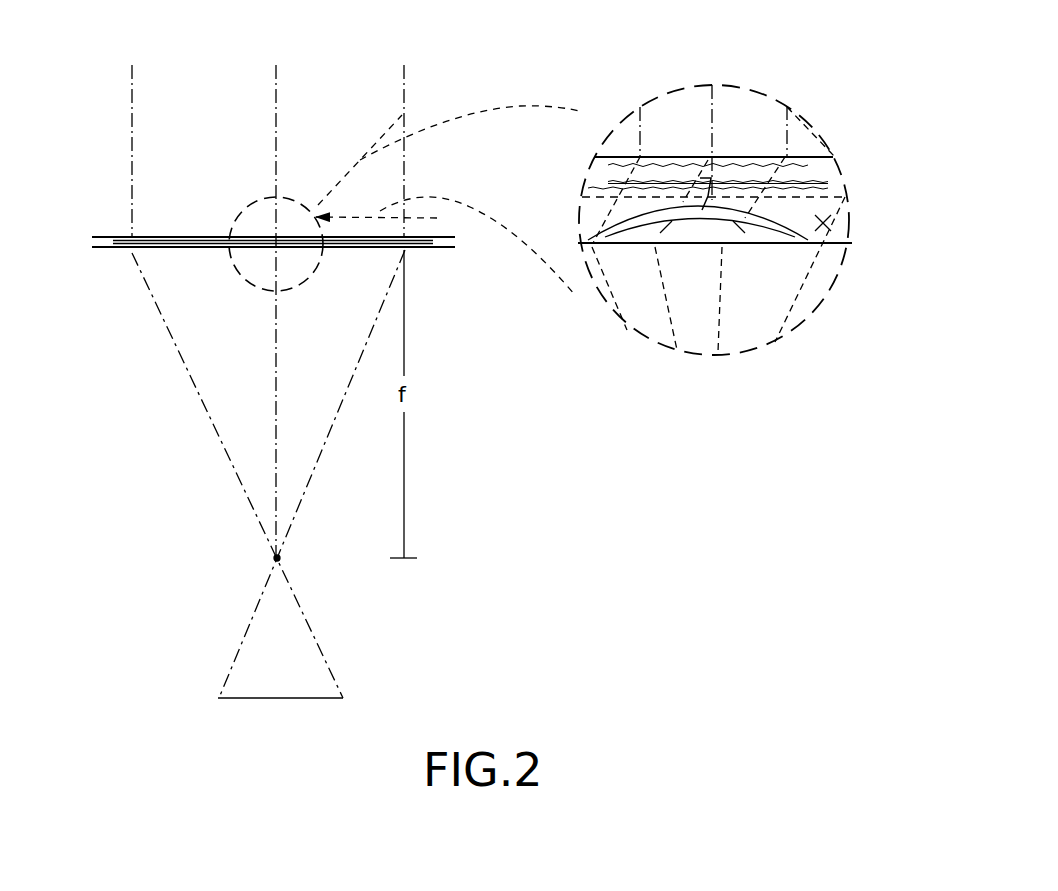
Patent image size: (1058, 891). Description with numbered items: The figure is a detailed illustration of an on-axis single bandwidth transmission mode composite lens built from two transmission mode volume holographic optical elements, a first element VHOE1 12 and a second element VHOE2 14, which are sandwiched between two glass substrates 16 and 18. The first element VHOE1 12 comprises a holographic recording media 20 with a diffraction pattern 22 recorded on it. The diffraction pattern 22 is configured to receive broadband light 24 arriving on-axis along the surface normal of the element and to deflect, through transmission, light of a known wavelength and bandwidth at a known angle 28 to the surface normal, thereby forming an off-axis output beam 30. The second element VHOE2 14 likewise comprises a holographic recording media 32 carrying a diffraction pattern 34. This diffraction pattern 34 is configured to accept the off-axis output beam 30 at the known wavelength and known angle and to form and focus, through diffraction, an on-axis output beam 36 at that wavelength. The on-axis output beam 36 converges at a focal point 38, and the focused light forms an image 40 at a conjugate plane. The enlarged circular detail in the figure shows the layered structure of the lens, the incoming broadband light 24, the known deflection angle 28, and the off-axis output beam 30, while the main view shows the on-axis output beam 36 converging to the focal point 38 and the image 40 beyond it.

The first transmission mode Volume Holographic Optical Element VHOE1 12 is at (556, 175).
The second transmission mode Volume Holographic Optical Element VHOE2 14 is at (561, 231).
The glass substrate 16 is at (102, 233).
The glass substrate 18 is at (102, 252).
The holographic recording media 20 is at (838, 177).
The diffraction pattern 22 is at (606, 178).
The broadband light 24 is at (303, 75).
The known angle θD 28 is at (720, 208).
The off-axis output beam 30 is at (759, 210).
The holographic recording media 32 is at (578, 219).
The diffraction pattern 34 is at (632, 232).
The on-axis output beam 36 is at (185, 368).
The focal point 38 is at (274, 558).
The image 40 is at (250, 708).